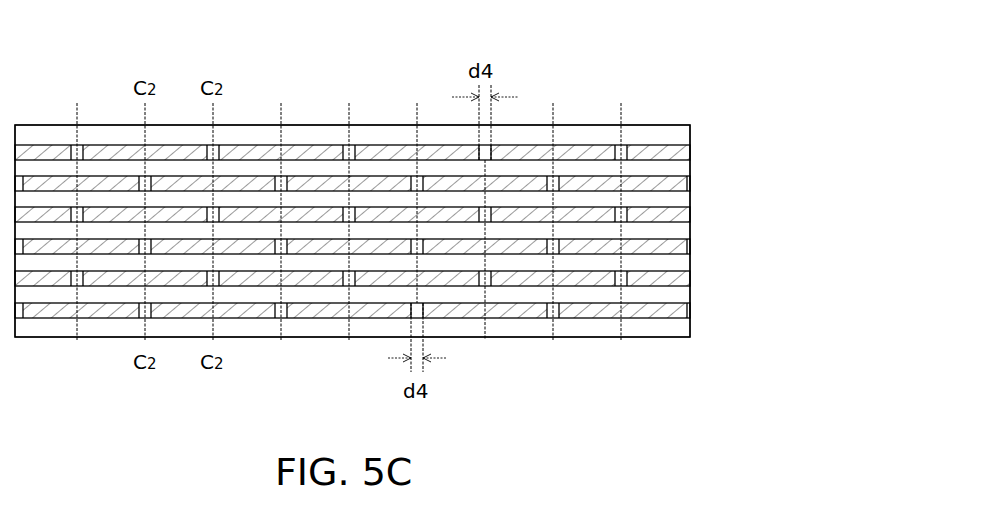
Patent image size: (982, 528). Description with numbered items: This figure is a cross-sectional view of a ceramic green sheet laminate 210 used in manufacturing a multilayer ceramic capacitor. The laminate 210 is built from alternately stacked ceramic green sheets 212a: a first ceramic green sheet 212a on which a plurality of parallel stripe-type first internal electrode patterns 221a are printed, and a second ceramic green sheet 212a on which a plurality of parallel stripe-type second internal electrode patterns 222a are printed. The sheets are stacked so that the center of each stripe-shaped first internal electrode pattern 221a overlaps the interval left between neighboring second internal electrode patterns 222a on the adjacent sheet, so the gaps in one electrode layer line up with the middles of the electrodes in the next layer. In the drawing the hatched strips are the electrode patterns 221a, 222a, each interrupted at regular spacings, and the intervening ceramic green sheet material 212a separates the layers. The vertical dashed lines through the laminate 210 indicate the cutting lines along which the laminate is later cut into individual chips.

The ceramic green sheet laminate 210 is at (92, 52).
The stripe-type second internal electrode pattern 222a is at (660, 207).
The stripe-type first internal electrode pattern 221a is at (693, 248).
The ceramic green sheet 212a is at (677, 230).